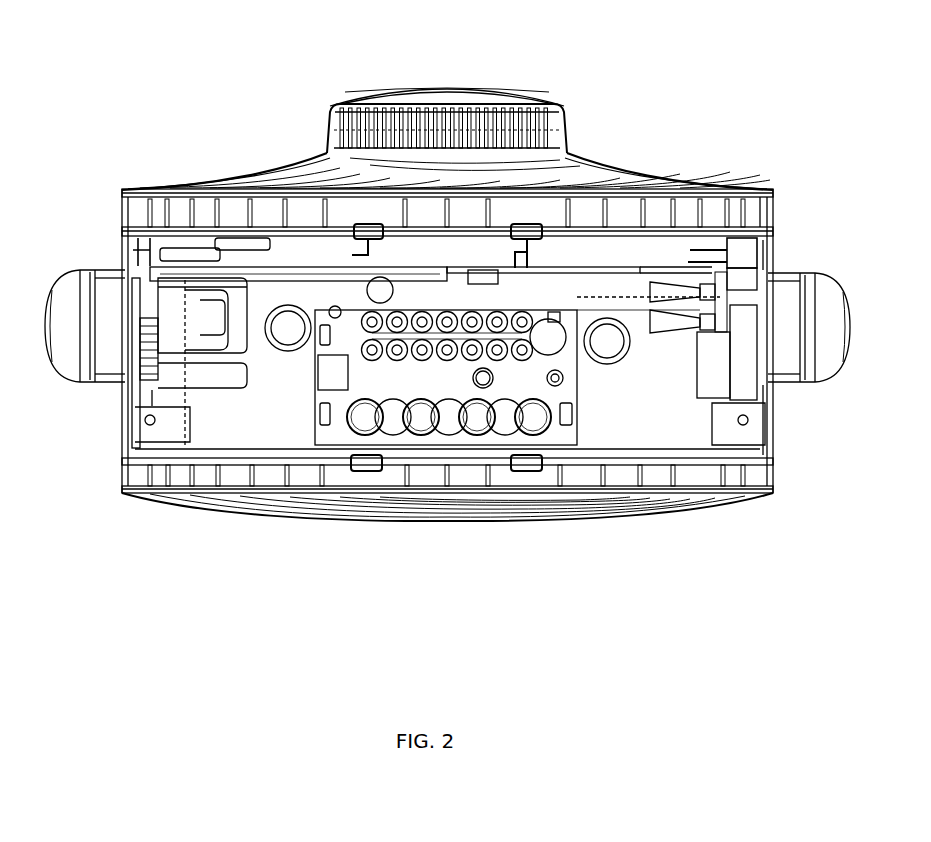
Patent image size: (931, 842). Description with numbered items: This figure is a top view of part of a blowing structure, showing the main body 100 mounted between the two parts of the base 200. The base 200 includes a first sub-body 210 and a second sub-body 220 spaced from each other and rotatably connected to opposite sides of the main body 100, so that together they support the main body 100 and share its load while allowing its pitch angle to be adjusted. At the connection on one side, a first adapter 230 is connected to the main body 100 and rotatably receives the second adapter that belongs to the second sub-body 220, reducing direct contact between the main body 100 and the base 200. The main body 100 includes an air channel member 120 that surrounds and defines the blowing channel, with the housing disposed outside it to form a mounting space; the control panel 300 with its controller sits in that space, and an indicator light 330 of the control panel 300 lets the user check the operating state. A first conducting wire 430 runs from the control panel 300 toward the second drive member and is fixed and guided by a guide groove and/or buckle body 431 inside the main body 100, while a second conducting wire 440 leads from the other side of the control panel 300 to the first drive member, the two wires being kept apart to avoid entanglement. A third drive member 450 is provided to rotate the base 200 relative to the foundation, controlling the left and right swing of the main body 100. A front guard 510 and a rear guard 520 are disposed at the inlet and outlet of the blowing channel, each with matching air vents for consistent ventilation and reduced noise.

The main body 100 is at (721, 578).
The air channel member 120 is at (622, 377).
The base 200 is at (62, 462).
The first sub-body 210 is at (70, 385).
The second sub-body 220 is at (826, 386).
The first adapter 230 is at (771, 200).
The control panel 300 is at (560, 447).
The indicator light 330 is at (422, 365).
The first conducting wire 430 is at (215, 280).
The guide groove and/or buckle body 431 is at (200, 296).
The second conducting wire 440 is at (635, 305).
The third drive member 450 is at (277, 275).
The front guard 510 is at (352, 520).
The rear guard 520 is at (332, 147).